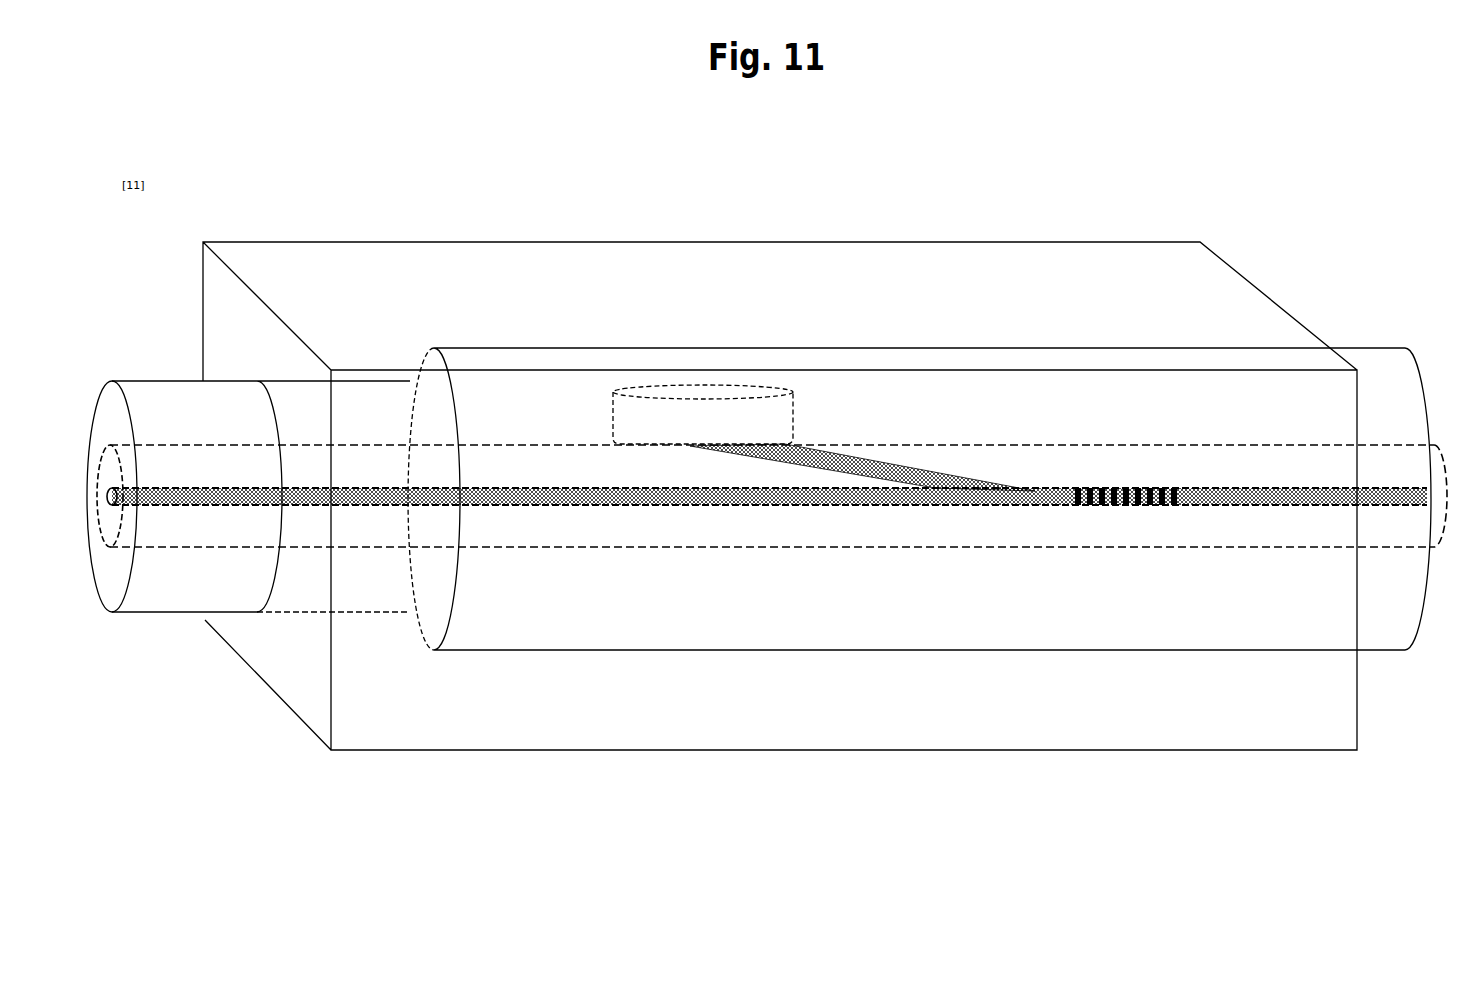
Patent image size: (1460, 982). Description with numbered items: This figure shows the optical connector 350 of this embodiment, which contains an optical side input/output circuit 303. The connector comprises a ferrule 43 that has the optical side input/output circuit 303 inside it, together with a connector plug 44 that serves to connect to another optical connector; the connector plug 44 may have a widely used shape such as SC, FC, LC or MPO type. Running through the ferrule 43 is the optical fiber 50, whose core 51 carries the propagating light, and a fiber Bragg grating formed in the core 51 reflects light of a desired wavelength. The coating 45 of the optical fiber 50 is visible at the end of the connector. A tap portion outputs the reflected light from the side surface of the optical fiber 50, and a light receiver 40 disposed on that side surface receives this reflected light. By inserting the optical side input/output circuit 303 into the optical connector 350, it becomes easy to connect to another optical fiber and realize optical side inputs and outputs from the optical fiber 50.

The optical connector 350 is at (1326, 272).
The connector plug 44 is at (515, 243).
The coating 45 is at (180, 614).
The ferrule 43 is at (1393, 348).
The optical side input/output circuit 303 is at (199, 438).
The core 51 is at (755, 506).
The optical fiber 50 is at (1000, 445).
The light receiver 40 is at (793, 416).